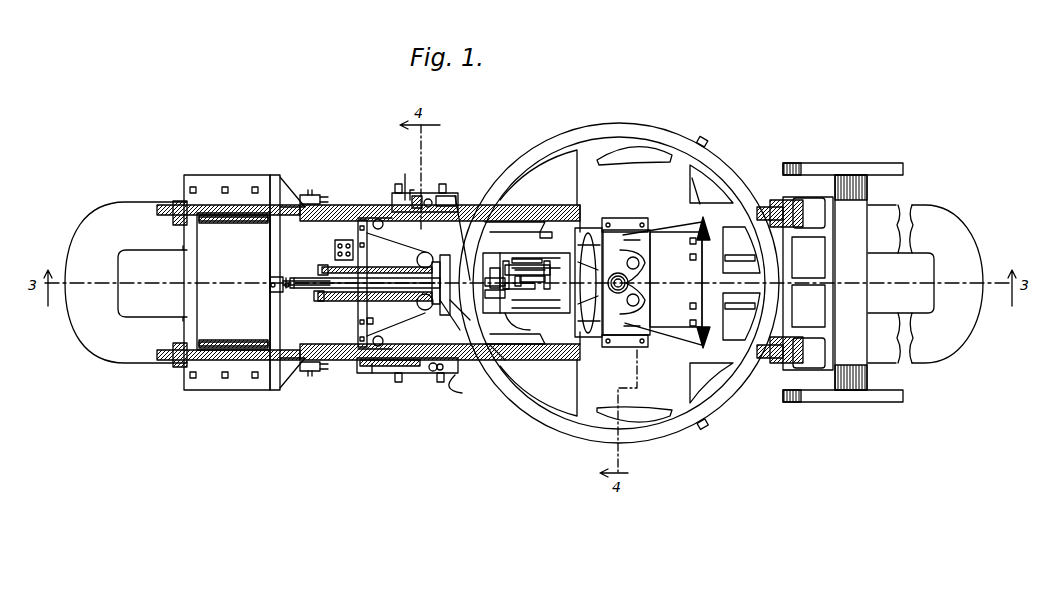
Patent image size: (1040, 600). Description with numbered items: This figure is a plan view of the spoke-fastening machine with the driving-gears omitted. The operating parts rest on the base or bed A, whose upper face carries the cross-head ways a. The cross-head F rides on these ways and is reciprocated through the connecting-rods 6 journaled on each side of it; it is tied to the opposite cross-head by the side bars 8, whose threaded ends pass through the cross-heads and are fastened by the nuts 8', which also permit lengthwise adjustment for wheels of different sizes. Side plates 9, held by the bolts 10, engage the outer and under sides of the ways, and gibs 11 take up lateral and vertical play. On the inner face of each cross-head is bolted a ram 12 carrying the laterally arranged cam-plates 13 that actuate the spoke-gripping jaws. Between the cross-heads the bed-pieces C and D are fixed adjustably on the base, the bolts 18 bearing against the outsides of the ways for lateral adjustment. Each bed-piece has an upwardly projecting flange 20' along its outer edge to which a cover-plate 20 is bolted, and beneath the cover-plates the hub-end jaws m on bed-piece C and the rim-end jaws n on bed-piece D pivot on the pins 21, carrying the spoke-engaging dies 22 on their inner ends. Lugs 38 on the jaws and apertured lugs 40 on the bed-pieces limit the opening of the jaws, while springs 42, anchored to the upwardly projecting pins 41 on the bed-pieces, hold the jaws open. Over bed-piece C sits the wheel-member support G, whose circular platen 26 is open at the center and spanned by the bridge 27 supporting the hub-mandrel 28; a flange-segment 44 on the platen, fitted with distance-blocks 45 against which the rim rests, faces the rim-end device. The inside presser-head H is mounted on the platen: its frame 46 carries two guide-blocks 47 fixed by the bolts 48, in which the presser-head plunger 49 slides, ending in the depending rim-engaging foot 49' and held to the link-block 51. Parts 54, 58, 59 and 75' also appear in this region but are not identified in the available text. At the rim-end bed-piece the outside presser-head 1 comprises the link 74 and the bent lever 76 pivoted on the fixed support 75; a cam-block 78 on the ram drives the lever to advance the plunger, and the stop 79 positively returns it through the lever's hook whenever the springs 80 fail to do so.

The outside presser-head 1 is at (446, 316).
The connecting-rods 6 is at (886, 168).
The side bars 8 is at (368, 288).
The nuts 8' is at (488, 281).
The side plates 9 is at (290, 196).
The bolts 10 is at (255, 186).
The gibs 11 is at (315, 194).
The rams 12 is at (300, 278).
The cam-plates 13 is at (322, 275).
The bolts 18 is at (398, 184).
The cover-plate 20 is at (534, 283).
The upwardly-projecting flange 20' is at (532, 234).
The pins 21 is at (420, 300).
The spoke-engaging dies 22 is at (578, 283).
The platen 26 is at (619, 283).
The bridge 27 is at (612, 282).
The hub-mandrel 28 is at (614, 286).
The laterally-projecting lugs 38 is at (440, 372).
The apertured lugs 40 is at (415, 196).
The upwardly-projecting pins 41 is at (372, 200).
The springs 42 is at (376, 374).
The flange-segment 44 is at (470, 230).
The distance-blocks 45 is at (476, 222).
The presser-head frame 46 is at (527, 255).
The guide-blocks 47 is at (540, 279).
The bolts 48 is at (504, 260).
The presser-head plunger 49 is at (540, 260).
The rim-engaging depending foot 49' is at (443, 271).
The link-block 51 is at (495, 288).
The pin 54 is at (517, 284).
The bracket 58 is at (446, 196).
The screw 59 is at (426, 283).
The link 74 is at (373, 302).
The fixed support 75 is at (403, 288).
The arm 75' is at (467, 318).
The bent lever 76 is at (312, 290).
The cam-block 78 is at (270, 282).
The stop 79 is at (270, 286).
The springs 80 is at (379, 321).
The base or bed A is at (158, 276).
The bed-piece C is at (700, 189).
The bed-piece D is at (459, 386).
The cross-head F is at (248, 267).
The wheel-member support G is at (524, 376).
The inside presser-head H is at (526, 283).
The cross-head ways a is at (171, 291).
The hub-end gripping jaws m is at (631, 281).
The rim-end gripping jaws n is at (483, 290).